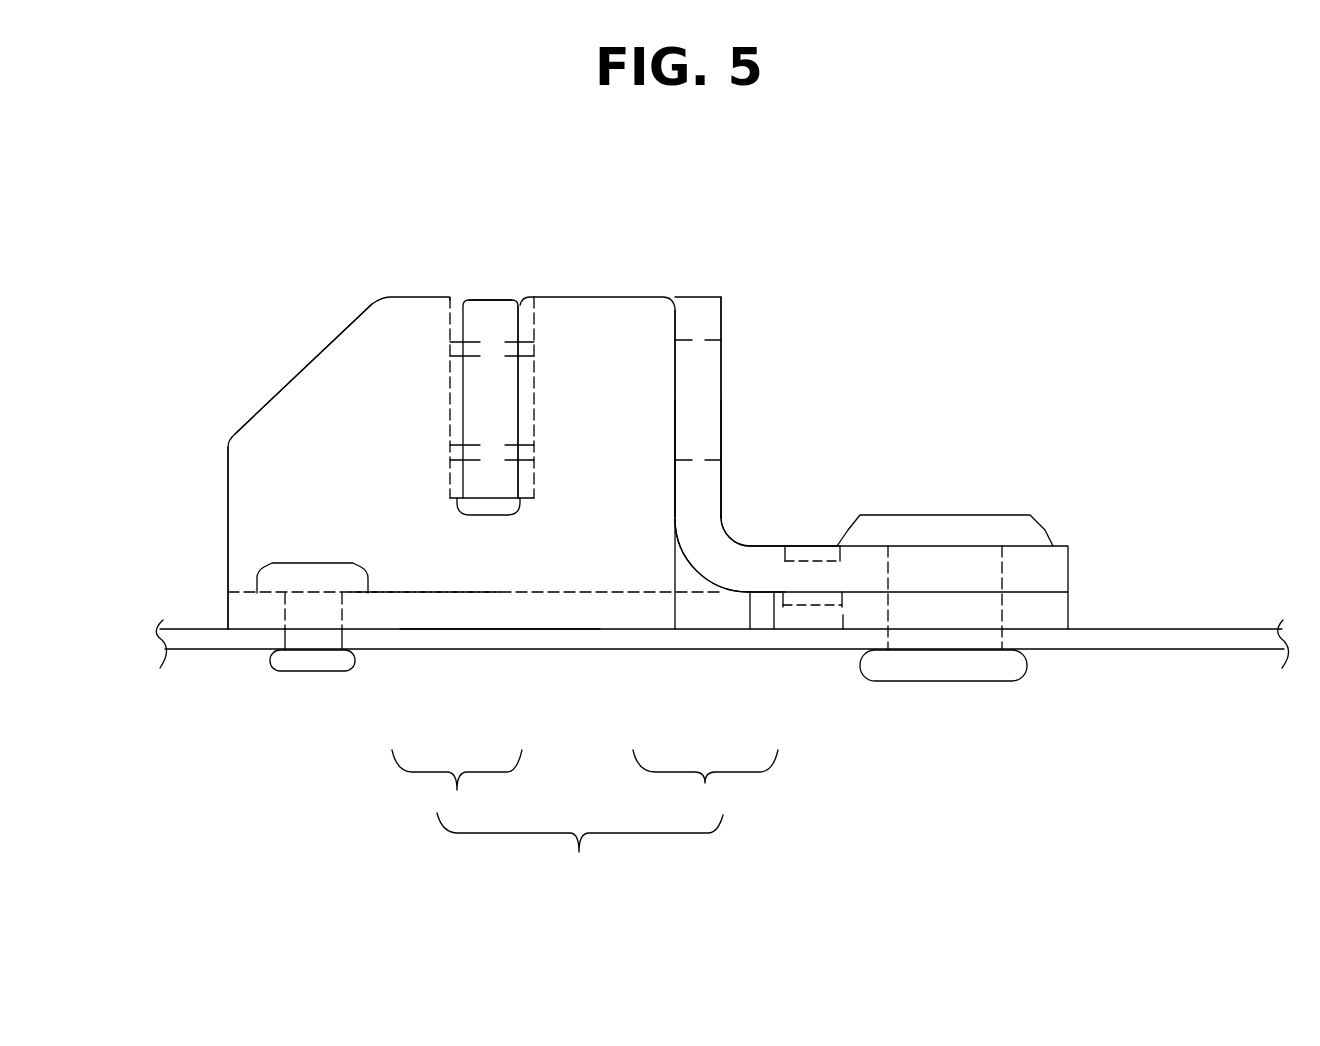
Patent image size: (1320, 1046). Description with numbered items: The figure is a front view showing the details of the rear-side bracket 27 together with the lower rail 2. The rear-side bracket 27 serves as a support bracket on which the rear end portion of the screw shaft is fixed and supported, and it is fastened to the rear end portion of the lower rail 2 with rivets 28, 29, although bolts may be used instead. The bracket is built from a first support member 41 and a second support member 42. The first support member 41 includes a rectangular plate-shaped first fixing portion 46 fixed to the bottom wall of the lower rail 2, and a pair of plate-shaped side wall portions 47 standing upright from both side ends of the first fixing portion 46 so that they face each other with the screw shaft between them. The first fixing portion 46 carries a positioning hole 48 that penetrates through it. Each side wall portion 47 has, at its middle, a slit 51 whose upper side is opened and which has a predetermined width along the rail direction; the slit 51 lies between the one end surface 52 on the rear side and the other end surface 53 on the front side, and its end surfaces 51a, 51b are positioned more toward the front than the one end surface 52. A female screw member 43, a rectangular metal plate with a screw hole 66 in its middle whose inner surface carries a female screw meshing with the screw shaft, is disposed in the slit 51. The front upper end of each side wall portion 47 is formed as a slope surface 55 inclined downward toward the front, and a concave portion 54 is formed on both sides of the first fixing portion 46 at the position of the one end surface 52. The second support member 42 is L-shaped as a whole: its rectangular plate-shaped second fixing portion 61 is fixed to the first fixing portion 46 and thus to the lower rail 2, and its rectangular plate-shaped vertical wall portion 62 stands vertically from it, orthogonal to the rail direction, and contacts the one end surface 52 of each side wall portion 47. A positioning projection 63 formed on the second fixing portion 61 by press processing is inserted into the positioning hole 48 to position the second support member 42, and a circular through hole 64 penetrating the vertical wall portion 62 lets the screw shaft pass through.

The lower rail 2 is at (1173, 637).
The rear-side bracket 27 is at (580, 847).
The rivet 28 is at (958, 681).
The rivet 29 is at (310, 671).
The first support member 41 is at (457, 786).
The second support member 42 is at (705, 785).
The female screw member 43 is at (489, 312).
The first fixing portion 46 is at (420, 600).
The side wall portion 47 is at (515, 578).
The positioning hole 48 is at (783, 616).
The slit 51 is at (466, 400).
The end surface of slit 51a is at (511, 312).
The end surface of slit 51b is at (465, 313).
The one end surface 52 is at (677, 327).
The other end surface 53 is at (227, 543).
The concave portion 54 is at (710, 603).
The slope surface 55 is at (330, 338).
The second fixing portion 61 is at (770, 578).
The vertical wall portion 62 is at (693, 482).
The positioning projection 63 is at (823, 603).
The through hole 64 is at (688, 343).
The screw hole 66 is at (538, 366).